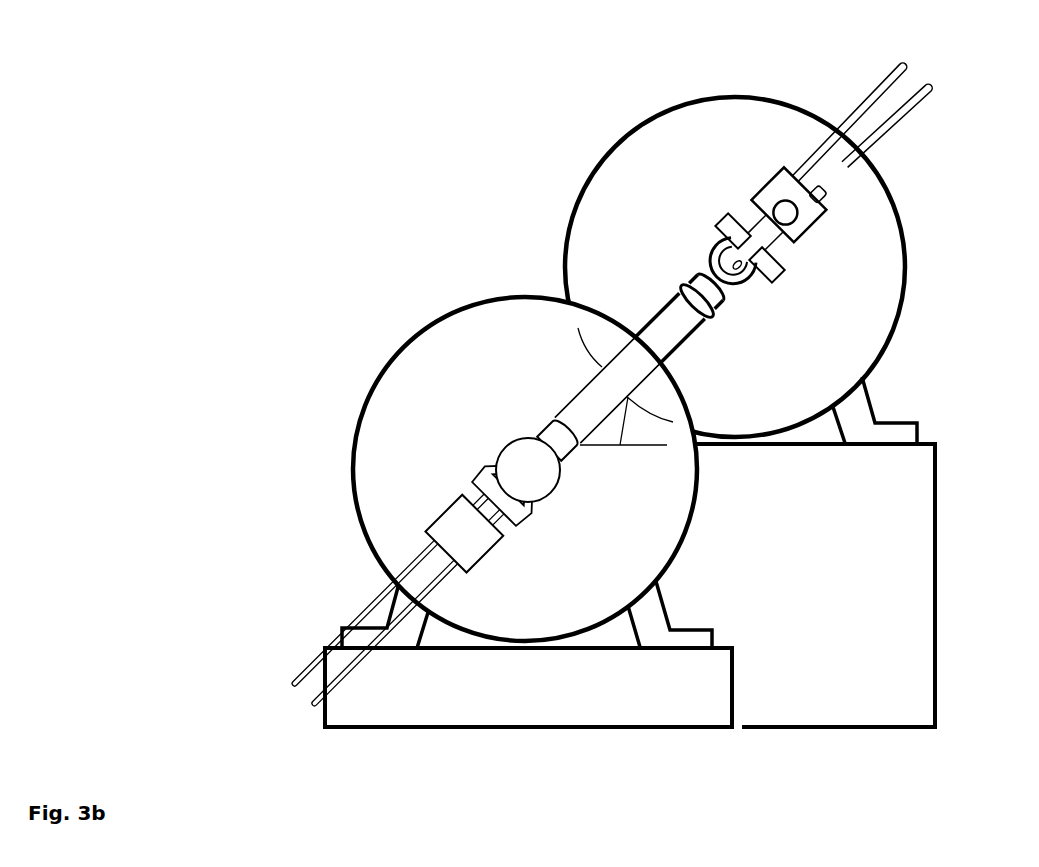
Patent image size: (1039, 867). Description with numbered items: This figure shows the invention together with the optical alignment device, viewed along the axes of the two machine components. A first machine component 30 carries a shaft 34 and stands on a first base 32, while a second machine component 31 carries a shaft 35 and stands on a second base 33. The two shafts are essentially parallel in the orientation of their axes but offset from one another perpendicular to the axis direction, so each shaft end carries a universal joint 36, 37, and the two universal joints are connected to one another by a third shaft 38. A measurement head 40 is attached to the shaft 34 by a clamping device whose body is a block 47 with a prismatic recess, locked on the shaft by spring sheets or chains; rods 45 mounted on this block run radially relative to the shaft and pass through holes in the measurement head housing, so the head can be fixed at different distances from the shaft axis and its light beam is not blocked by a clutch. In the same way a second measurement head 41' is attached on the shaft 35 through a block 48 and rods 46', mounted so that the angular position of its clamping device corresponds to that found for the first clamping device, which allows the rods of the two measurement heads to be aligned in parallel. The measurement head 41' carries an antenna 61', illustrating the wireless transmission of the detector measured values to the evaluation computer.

The first machine component 30 is at (793, 140).
The second machine component 31 is at (395, 398).
The first base 32 is at (847, 705).
The second base 33 is at (546, 705).
The shaft 34 is at (745, 260).
The shaft 35 is at (500, 465).
The universal joint 36 is at (715, 287).
The universal joint 37 is at (545, 432).
The third shaft 38 is at (680, 327).
The measurement head 40 is at (777, 188).
The second measurement head 41' is at (376, 534).
The holding device rods 45 is at (897, 125).
The rods 46' is at (344, 613).
The block 47 is at (778, 270).
The block 48 is at (478, 480).
The antenna 61' is at (354, 633).